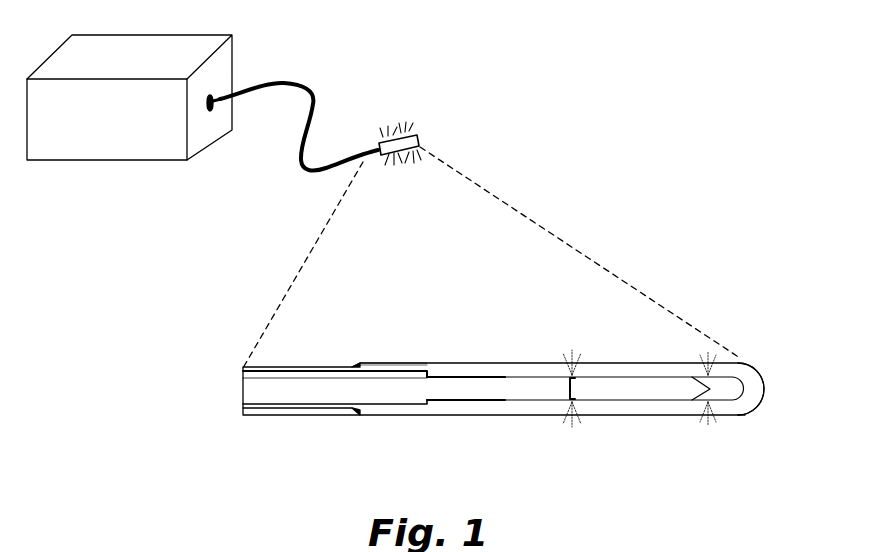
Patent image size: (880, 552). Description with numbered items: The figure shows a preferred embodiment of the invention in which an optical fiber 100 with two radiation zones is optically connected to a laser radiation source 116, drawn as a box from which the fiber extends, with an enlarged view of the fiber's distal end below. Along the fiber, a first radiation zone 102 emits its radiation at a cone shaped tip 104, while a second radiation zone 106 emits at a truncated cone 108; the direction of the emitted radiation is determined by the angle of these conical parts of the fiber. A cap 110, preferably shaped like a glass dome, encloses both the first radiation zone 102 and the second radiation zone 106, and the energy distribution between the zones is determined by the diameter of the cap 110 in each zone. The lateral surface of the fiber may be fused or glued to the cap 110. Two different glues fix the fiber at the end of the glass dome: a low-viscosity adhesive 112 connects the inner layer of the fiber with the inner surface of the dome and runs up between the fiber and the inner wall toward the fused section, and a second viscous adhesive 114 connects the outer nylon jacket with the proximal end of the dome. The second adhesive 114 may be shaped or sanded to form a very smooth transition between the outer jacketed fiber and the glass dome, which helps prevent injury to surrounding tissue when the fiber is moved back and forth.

The optical fiber 100 is at (260, 114).
The first radiation zone 102 is at (402, 120).
The cone shaped tip 104 is at (739, 417).
The second radiation zone 106 is at (380, 126).
The truncated cone 108 is at (565, 388).
The cap 110 is at (747, 354).
The low-viscosity adhesive 112 is at (442, 365).
The second viscous adhesive 114 is at (367, 370).
The laser radiation source 116 is at (129, 97).